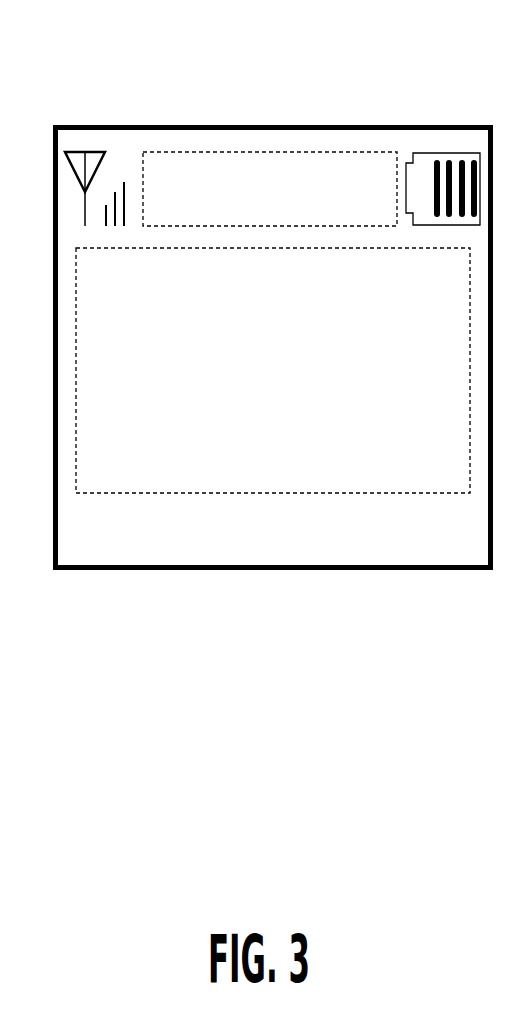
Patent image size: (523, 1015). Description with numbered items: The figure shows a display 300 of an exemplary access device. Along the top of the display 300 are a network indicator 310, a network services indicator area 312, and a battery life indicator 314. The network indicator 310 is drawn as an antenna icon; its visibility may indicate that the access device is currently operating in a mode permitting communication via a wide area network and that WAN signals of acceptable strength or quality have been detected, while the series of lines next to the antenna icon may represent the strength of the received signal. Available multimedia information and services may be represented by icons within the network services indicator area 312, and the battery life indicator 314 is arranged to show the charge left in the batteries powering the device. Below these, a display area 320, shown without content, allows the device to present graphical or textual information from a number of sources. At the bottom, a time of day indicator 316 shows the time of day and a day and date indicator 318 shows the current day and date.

The display 300 is at (62, 592).
The network indicator 310 is at (98, 150).
The network services indicator area 312 is at (268, 150).
The battery life indicator 314 is at (448, 152).
The time of day indicator 316 is at (150, 555).
The day and date indicator 318 is at (390, 555).
The display area 320 is at (270, 514).